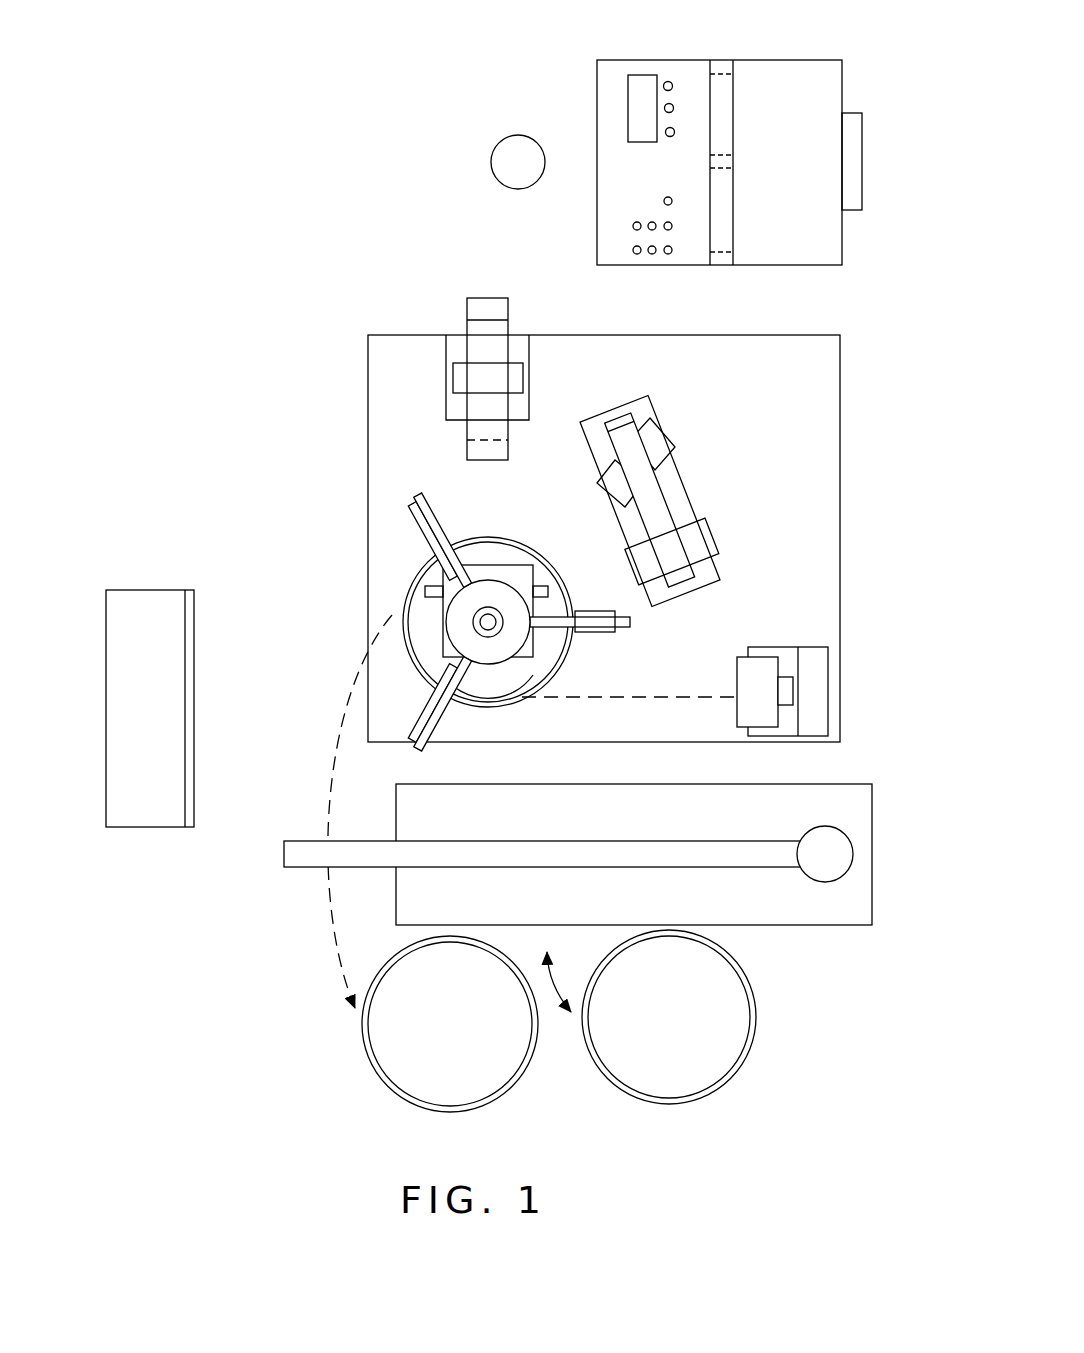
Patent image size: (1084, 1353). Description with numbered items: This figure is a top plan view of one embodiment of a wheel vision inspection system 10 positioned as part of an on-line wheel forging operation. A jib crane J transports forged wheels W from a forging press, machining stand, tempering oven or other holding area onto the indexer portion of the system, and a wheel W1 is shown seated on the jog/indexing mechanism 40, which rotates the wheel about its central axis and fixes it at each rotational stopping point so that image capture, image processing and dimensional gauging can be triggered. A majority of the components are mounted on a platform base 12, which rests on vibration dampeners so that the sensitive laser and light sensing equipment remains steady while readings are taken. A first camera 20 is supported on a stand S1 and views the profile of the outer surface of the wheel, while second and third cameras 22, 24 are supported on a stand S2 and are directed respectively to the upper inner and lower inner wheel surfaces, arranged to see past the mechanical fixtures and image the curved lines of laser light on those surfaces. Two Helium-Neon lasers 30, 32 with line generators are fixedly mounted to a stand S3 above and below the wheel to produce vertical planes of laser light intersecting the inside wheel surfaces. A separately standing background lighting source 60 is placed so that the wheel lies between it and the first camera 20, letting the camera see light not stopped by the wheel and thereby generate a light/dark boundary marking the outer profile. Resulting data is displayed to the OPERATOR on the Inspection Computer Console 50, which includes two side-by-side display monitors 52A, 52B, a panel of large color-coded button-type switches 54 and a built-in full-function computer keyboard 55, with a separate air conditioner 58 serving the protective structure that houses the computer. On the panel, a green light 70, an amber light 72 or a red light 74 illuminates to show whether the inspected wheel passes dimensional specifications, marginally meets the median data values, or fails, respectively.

The wheel vision inspection system 10 is at (350, 503).
The platform base 12 is at (810, 406).
The first camera 20 is at (793, 690).
The second camera 22 is at (668, 446).
The third camera 24 is at (708, 522).
The Helium-Neon laser 30 is at (508, 328).
The Helium-Neon laser 32 is at (467, 305).
The jog/indexing mechanism 40 is at (473, 622).
The Inspection Computer Console 50 is at (727, 142).
The display monitor 52A is at (733, 104).
The display monitor 52B is at (733, 220).
The panel of color-coded button-type switches 54 is at (597, 218).
The computer keyboard 55 is at (628, 88).
The air conditioner 58 is at (862, 167).
The background lighting source 60 is at (140, 590).
The green light 70 is at (667, 81).
The amber light 72 is at (671, 103).
The red light 74 is at (670, 137).
The stand S1 is at (762, 647).
The stand S2 is at (640, 396).
The stand S3 is at (446, 352).
The wheel W1 is at (550, 562).
The forged wheels W is at (464, 1059).
The jib crane J is at (668, 829).
The operator OPERATOR is at (499, 143).